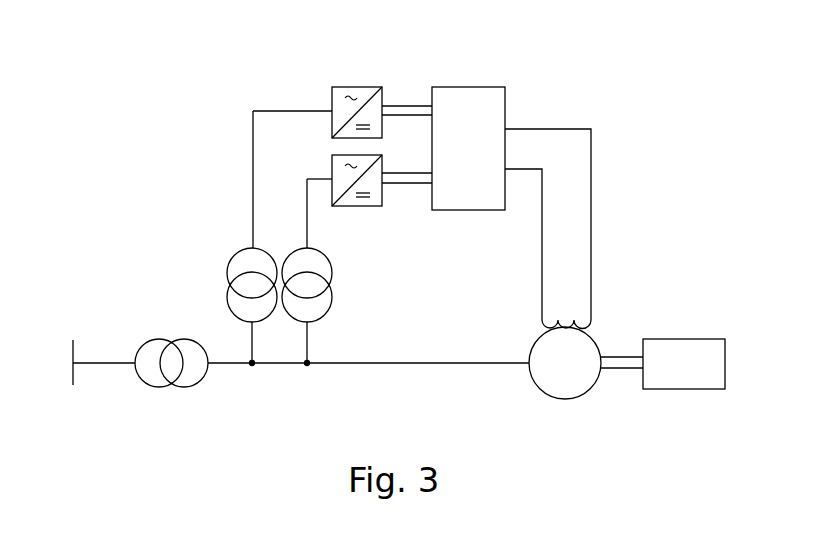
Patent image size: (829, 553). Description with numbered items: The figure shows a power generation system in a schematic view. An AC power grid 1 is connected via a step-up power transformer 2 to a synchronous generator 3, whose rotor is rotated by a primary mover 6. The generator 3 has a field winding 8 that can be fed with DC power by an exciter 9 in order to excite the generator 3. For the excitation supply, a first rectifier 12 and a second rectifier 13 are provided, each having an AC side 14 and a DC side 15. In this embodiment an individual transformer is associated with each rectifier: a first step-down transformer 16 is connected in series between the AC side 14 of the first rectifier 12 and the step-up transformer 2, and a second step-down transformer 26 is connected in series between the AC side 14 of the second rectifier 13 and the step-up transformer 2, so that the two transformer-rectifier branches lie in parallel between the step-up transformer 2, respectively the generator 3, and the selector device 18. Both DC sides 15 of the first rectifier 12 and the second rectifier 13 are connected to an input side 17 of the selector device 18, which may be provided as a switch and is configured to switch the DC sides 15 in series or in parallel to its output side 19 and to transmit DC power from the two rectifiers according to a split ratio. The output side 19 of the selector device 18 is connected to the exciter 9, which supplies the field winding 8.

The AC power grid 1 is at (73, 385).
The step-up power transformer 2 is at (147, 378).
The synchronous generator 3 is at (562, 393).
The primary mover 6 is at (673, 389).
The field winding 8 is at (592, 318).
The exciter 9 is at (583, 282).
The first rectifier 12 is at (342, 90).
The second rectifier 13 is at (375, 206).
The AC side 14 is at (327, 97).
The DC side 15 is at (393, 92).
The first step-down transformer 16 is at (233, 300).
The input side 17 is at (424, 198).
The selector device 18 is at (448, 96).
The output side 19 is at (530, 95).
The second step-down transformer 26 is at (318, 302).